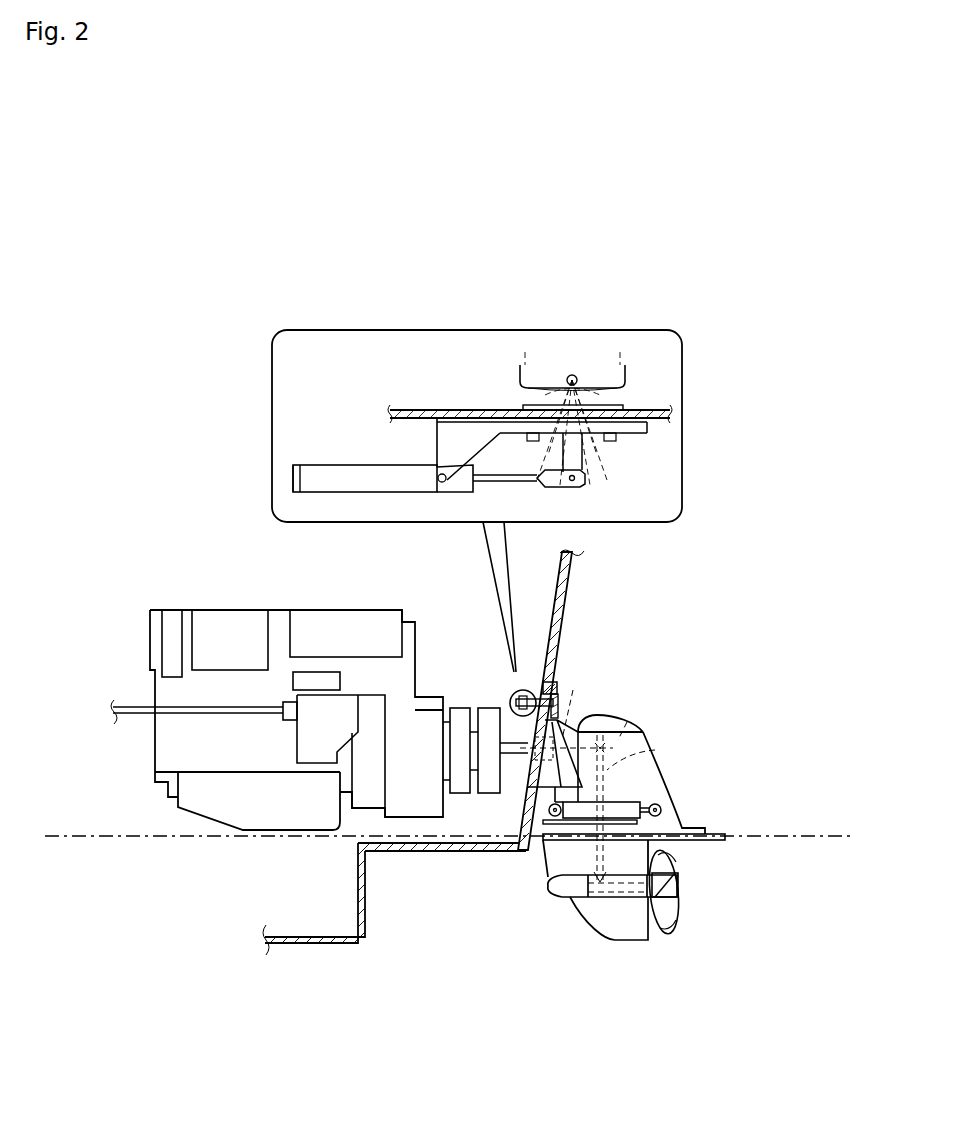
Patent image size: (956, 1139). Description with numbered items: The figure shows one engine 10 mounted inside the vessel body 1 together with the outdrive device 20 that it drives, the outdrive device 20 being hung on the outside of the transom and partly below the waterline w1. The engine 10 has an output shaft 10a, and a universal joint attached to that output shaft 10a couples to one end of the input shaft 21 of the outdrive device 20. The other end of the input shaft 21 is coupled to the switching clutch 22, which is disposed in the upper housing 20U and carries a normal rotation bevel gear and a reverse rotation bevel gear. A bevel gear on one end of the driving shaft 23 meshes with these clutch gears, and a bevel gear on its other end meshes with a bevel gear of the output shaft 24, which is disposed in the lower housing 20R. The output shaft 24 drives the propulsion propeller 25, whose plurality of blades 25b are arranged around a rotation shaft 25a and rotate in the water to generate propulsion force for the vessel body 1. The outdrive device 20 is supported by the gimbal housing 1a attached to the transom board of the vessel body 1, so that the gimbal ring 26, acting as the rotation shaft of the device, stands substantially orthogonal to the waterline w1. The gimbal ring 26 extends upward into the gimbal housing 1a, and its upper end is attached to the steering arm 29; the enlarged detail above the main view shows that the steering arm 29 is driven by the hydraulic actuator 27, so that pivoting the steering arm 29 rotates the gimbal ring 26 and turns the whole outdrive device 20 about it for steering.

The vessel body 1 is at (571, 578).
The gimbal housing 1a is at (557, 690).
The engine 10 is at (125, 619).
The output shaft 10a is at (517, 747).
The outdrive device 20 is at (700, 675).
The upper housing 20U is at (667, 777).
The lower housing 20R is at (552, 888).
The input shaft 21 is at (585, 722).
The switching clutch 22 is at (627, 722).
The driving shaft 23 is at (655, 750).
The output shaft 24 is at (625, 897).
The propulsion propeller 25 is at (703, 937).
The rotation shaft 25a is at (674, 863).
The blades 25b is at (678, 919).
The gimbal ring 26 is at (566, 752).
The hydraulic actuator 27 is at (511, 697).
The steering arm 29 is at (540, 695).
The waterline w1 is at (447, 817).